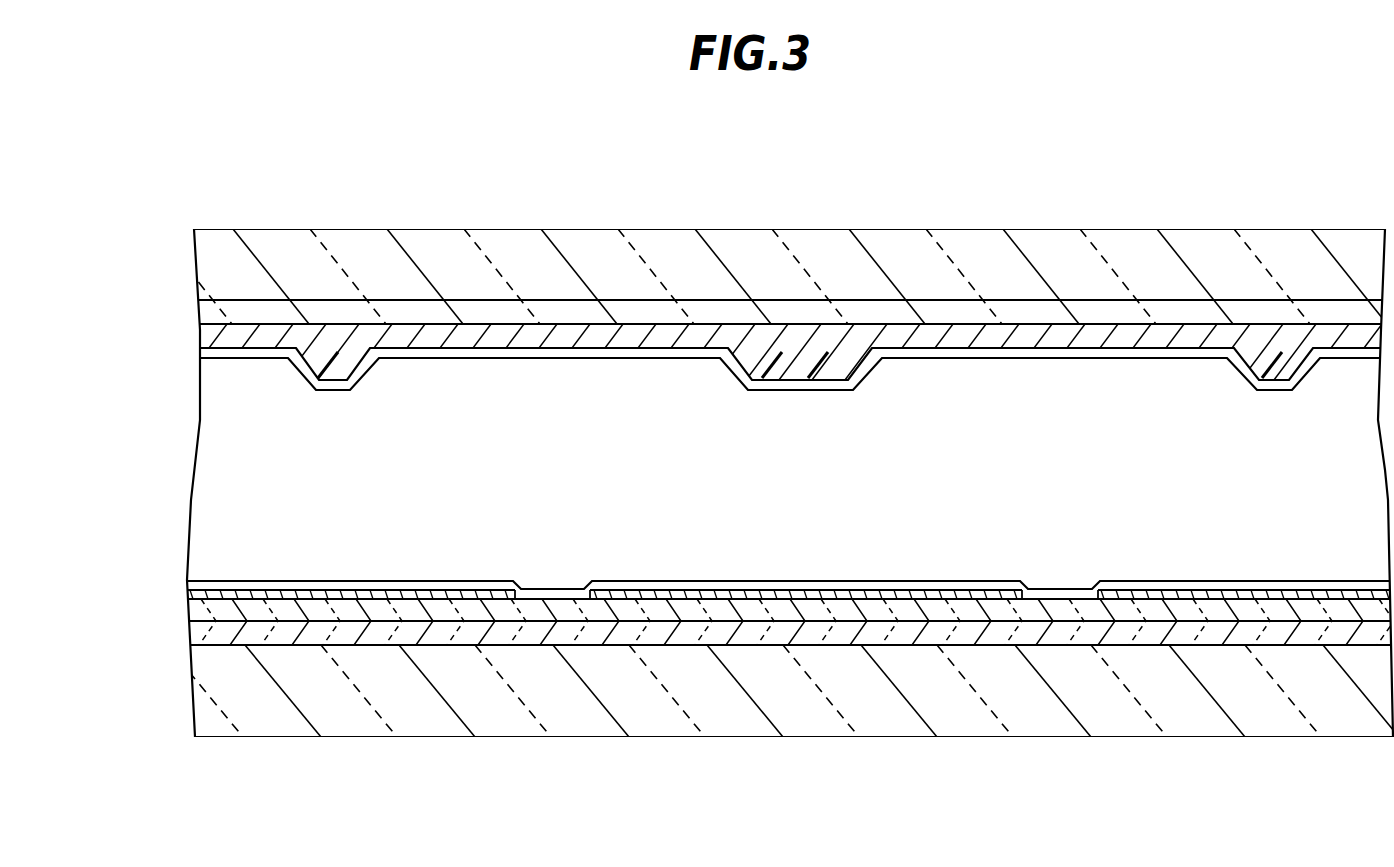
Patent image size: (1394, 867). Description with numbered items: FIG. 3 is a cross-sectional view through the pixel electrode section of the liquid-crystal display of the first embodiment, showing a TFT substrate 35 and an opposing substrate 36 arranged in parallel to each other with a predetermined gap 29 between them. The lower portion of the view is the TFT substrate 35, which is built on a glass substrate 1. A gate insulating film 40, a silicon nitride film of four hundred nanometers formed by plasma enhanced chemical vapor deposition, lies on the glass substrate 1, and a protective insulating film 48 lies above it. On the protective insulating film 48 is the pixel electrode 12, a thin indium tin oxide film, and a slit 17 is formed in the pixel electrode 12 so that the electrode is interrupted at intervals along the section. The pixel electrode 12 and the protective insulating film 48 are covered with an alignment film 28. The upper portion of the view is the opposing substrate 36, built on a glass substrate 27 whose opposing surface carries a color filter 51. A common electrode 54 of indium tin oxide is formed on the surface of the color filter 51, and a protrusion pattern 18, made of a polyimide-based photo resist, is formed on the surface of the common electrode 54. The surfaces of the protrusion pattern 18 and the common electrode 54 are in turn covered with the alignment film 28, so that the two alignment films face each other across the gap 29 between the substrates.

The glass substrate 1 is at (283, 717).
The pixel electrode 12 is at (188, 593).
The slit 17 is at (517, 590).
The protrusion pattern 18 is at (331, 381).
The glass substrate 27 is at (282, 229).
The alignment film 28 is at (202, 352).
The liquid crystal layer 29 is at (215, 465).
The TFT substrate 35 is at (753, 662).
The opposing substrate 36 is at (754, 302).
The gate insulating film 40 is at (188, 633).
The protective insulating film 48 is at (188, 610).
The color filter 51 is at (207, 315).
The common electrode 54 is at (202, 337).